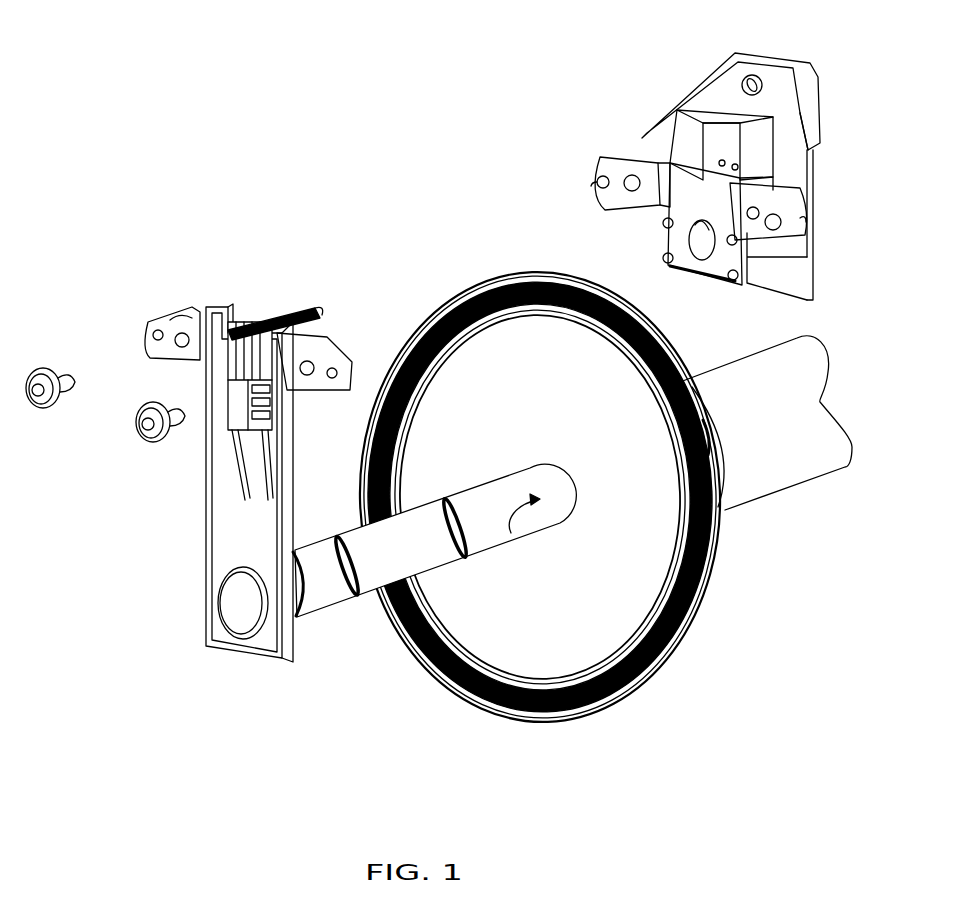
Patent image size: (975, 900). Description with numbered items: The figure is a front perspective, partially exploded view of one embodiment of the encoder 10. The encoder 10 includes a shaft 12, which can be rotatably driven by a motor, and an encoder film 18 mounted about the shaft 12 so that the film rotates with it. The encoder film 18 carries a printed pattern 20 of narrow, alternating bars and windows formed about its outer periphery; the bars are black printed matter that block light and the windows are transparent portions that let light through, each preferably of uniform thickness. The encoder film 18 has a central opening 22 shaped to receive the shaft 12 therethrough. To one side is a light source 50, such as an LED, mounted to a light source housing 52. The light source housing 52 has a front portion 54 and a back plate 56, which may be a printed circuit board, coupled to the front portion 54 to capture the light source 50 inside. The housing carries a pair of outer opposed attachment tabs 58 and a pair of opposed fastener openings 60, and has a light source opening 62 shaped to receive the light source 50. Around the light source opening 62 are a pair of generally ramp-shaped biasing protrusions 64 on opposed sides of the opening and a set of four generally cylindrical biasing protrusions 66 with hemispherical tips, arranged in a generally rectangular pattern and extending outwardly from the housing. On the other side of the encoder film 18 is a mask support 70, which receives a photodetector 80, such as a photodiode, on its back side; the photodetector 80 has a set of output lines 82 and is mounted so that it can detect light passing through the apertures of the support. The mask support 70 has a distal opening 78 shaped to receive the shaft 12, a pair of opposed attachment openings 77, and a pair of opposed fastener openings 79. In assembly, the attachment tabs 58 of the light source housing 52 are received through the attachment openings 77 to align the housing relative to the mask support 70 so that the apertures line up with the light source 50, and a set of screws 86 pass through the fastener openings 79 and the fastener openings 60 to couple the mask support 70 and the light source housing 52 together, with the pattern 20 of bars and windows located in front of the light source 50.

The encoder 10 is at (205, 245).
The shaft 12 is at (370, 590).
The encoder film 18 is at (572, 672).
The printed pattern 20 is at (497, 688).
The central opening 22 is at (520, 538).
The light source 50 is at (707, 238).
The light source housing 52 is at (687, 108).
The front portion 54 is at (793, 55).
The back plate 56 is at (803, 272).
The attachment tabs 58 is at (593, 183).
The fastener openings 60 is at (630, 153).
The light source opening 62 is at (663, 268).
The ramp-shaped biasing protrusions 64 is at (692, 273).
The cylindrical biasing protrusions 66 is at (663, 228).
The mask support 70 is at (288, 668).
The attachment openings 77 is at (147, 335).
The distal opening 78 is at (236, 603).
The fastener openings 79 is at (178, 320).
The photodetector 80 is at (262, 423).
The output lines 82 is at (280, 313).
The screws 86 is at (43, 410).